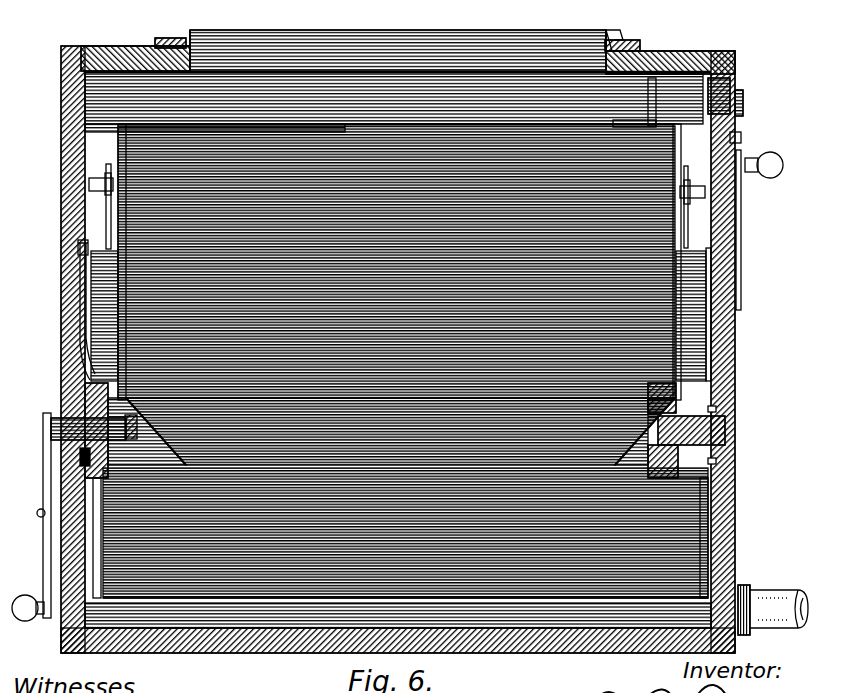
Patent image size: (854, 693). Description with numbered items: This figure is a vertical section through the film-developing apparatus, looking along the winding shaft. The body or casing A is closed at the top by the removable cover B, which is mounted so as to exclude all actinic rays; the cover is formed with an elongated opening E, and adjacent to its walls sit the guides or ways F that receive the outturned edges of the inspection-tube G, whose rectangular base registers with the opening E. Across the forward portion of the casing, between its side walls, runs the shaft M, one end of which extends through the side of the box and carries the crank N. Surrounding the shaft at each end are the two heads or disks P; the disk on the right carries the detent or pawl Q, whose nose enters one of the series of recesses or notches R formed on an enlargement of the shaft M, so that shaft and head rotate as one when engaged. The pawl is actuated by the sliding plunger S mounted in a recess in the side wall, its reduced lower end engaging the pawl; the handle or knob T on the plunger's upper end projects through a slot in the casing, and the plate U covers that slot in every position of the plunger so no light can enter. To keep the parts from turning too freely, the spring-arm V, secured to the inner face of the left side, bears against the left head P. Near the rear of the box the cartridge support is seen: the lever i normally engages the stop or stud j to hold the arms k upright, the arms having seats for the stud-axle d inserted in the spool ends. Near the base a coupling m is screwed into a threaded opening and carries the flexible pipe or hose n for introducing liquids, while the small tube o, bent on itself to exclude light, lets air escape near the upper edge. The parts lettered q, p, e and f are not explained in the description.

The body or casing A is at (53, 110).
The removable cover B is at (103, 32).
The elongated opening E is at (398, 51).
The guides or ways F is at (152, 30).
The inspection-tube G is at (605, 30).
The plate U is at (724, 82).
The handle or knob T is at (737, 95).
The stop or stud j is at (733, 130).
The lever i is at (733, 212).
The small tube o is at (648, 101).
The stud-axle d is at (94, 170).
The arms k is at (100, 208).
The spring-arm V is at (68, 250).
The sliding plunger S is at (705, 338).
The detent or pawl Q is at (625, 440).
The lower bearing block q is at (720, 387).
The recesses or notches R is at (708, 400).
The plate p is at (708, 462).
The shaft M is at (80, 415).
The crank N is at (35, 458).
The heads or disks P is at (80, 458).
The roller bearing plate e is at (93, 536).
The bottom plate f is at (220, 560).
The coupling m is at (738, 575).
The flexible pipe or hose n is at (776, 582).